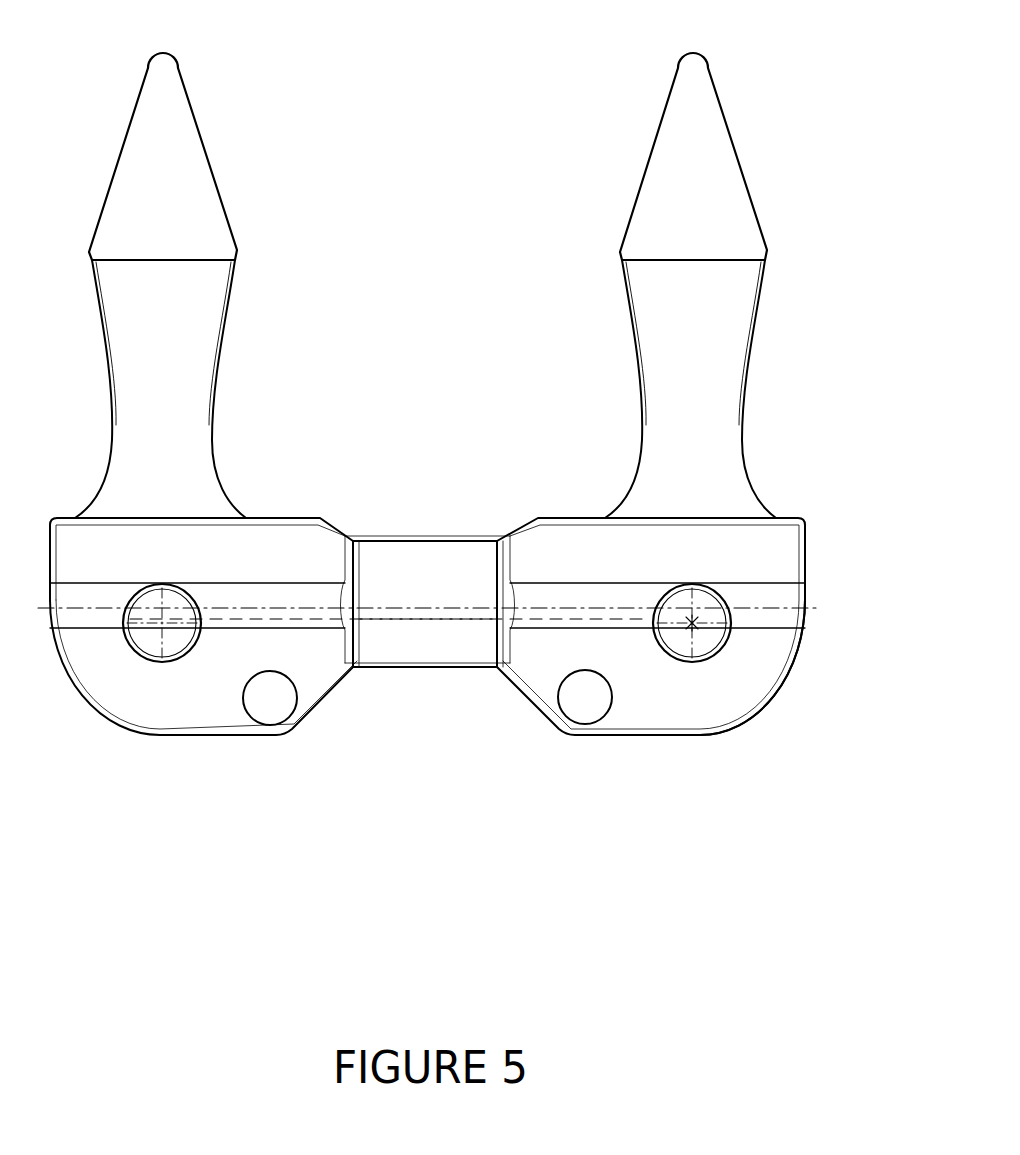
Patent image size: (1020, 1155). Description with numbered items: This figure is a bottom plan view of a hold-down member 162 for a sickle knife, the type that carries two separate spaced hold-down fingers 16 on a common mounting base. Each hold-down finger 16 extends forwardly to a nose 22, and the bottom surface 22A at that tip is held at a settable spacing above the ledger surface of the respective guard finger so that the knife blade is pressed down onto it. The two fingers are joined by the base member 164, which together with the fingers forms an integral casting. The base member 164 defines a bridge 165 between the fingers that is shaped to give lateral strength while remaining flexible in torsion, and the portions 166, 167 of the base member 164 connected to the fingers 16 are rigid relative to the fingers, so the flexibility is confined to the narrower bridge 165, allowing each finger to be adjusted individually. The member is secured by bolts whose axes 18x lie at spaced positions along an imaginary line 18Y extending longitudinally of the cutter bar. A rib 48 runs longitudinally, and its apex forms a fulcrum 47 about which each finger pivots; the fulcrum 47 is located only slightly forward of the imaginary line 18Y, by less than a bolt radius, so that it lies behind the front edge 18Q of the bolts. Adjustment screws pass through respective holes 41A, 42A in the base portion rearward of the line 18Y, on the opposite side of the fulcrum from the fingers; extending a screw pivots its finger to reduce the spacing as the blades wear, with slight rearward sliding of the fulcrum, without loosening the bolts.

The bottom surface 22A is at (165, 60).
The nose 22 is at (197, 168).
The hold-down finger 16 is at (183, 372).
The hold-down member 162 is at (470, 628).
The portion of base member 166 is at (147, 710).
The bridge 165 is at (458, 652).
The base member 164 is at (645, 708).
The portion of base member 167 is at (713, 710).
The rib 48 is at (778, 593).
The fulcrum 47 is at (787, 605).
The edge of bolt front 18Q is at (693, 588).
The bolt axis 18x is at (692, 623).
The imaginary line 18Y is at (407, 618).
The adjustment screw hole 42A is at (270, 706).
The adjustment screw hole 41A is at (583, 710).